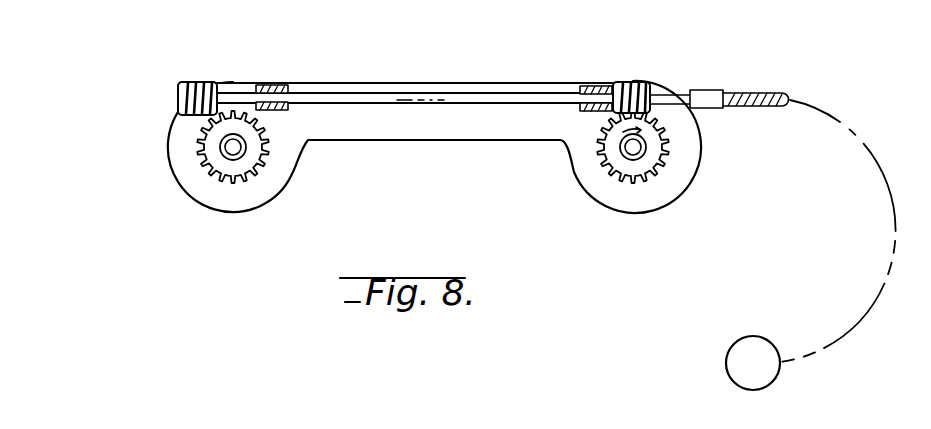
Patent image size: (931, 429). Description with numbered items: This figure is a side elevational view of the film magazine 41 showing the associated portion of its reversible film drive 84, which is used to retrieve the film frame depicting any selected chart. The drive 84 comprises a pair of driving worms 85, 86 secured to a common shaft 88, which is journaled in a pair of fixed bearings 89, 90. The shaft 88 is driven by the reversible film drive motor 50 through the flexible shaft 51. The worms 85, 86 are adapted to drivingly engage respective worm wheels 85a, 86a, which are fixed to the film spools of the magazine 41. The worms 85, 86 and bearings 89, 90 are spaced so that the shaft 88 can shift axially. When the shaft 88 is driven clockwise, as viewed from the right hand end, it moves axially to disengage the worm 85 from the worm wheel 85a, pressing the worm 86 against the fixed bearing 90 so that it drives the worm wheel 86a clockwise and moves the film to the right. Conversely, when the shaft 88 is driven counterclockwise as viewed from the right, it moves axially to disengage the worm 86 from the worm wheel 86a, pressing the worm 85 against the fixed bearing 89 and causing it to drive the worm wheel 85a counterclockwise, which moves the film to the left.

The magazine 41 is at (204, 201).
The reversible film drive 84 is at (371, 72).
The driving worm 85 is at (195, 82).
The worm wheel 85a is at (203, 153).
The driving worm 86 is at (632, 82).
The worm wheel 86a is at (664, 152).
The common shaft 88 is at (380, 93).
The fixed bearing 89 is at (271, 85).
The fixed bearing 90 is at (589, 86).
The flexible shaft 51 is at (760, 90).
The reversible film drive motor 50 is at (744, 340).